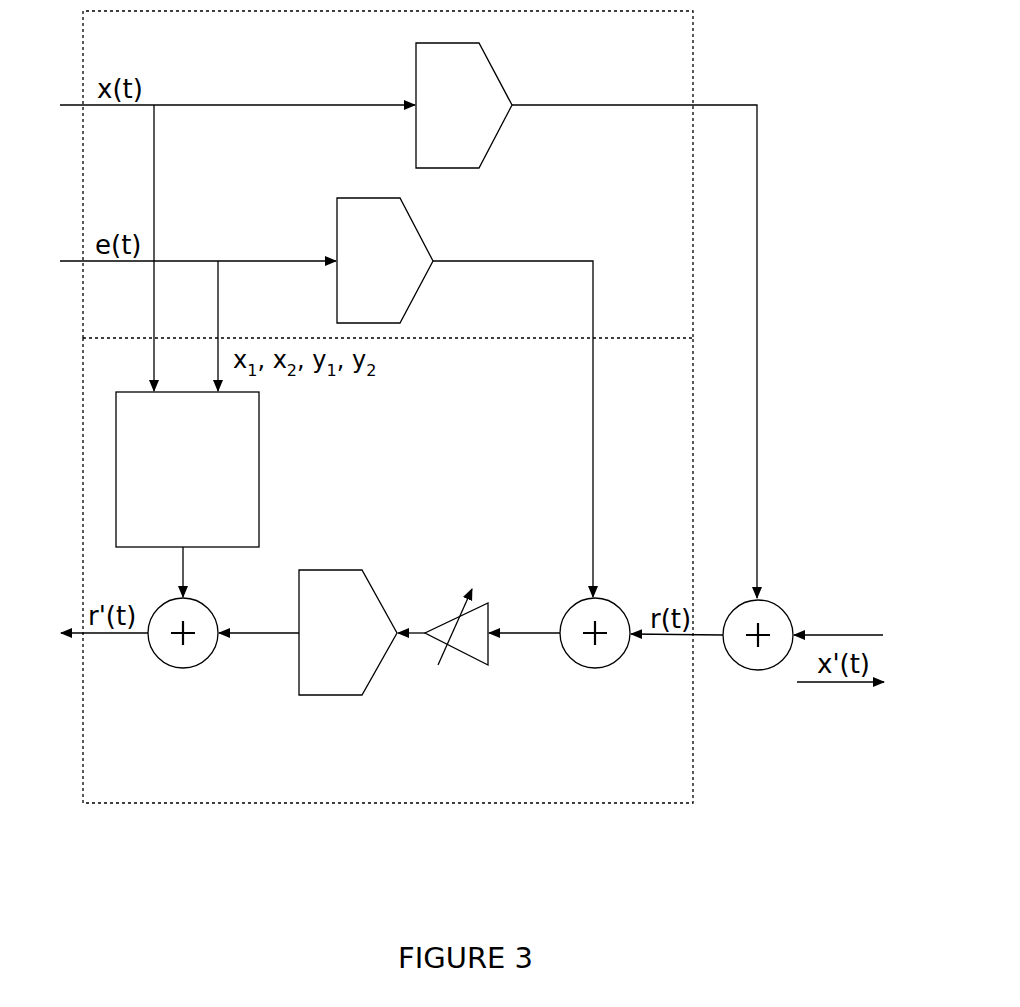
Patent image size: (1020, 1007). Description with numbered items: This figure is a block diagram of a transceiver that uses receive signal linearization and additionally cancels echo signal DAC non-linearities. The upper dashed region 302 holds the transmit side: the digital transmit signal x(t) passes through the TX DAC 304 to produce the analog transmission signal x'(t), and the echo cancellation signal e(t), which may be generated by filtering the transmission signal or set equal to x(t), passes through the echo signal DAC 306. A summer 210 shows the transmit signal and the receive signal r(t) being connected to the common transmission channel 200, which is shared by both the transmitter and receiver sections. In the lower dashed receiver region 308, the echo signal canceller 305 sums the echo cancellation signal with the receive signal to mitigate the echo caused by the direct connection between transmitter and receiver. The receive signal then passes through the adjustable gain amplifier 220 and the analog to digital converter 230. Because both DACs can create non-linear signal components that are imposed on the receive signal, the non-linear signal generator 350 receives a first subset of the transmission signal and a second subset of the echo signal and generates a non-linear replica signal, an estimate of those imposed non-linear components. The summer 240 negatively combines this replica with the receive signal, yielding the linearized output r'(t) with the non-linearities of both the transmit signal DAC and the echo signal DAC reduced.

The digital transmit section 302 is at (275, 55).
The TX DAC 304 is at (441, 141).
The echo signal DAC 306 is at (363, 298).
The receive/processing section 308 is at (467, 492).
The non-linear signal generator 350 is at (171, 527).
The summer 240 is at (187, 650).
The analog to digital converter (ADC) 230 is at (330, 666).
The adjustable gain amplifier 220 is at (472, 653).
The echo signal canceller 305 is at (595, 656).
The summer 210 is at (758, 671).
The transmission channel 200 is at (833, 628).